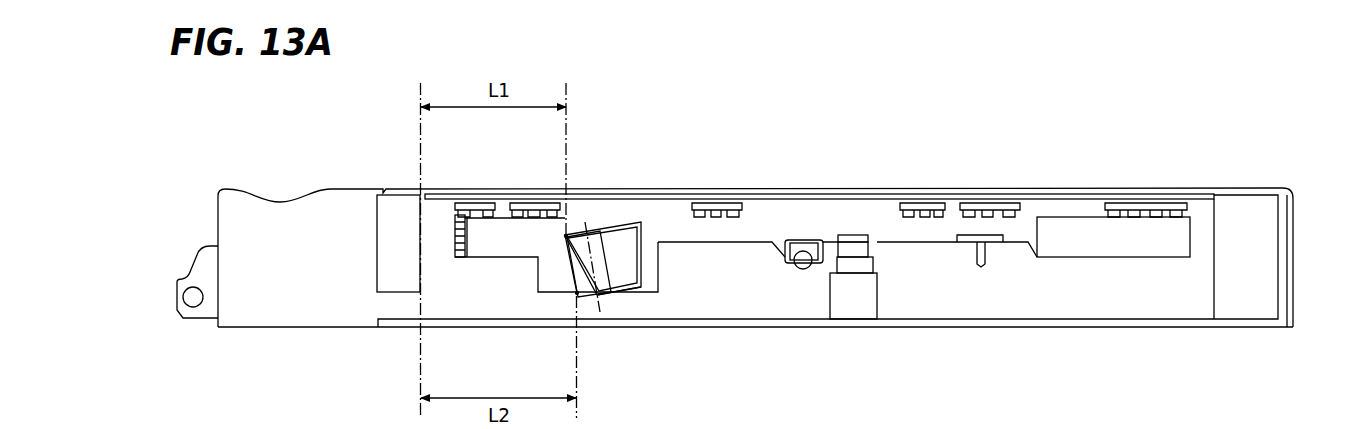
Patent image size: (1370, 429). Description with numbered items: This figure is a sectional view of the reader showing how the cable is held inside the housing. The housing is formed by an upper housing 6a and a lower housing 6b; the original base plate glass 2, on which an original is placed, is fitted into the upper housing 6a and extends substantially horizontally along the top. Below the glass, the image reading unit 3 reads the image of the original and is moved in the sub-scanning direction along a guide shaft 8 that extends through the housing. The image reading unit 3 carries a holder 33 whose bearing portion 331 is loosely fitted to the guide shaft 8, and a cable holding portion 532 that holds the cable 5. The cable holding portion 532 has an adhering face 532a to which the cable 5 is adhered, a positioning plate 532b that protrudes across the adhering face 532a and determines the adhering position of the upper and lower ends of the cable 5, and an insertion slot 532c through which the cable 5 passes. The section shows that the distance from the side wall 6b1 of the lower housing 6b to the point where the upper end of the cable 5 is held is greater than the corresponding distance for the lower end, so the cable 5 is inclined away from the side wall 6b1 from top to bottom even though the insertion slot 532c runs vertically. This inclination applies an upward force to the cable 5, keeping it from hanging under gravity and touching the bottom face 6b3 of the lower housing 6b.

The original base plate glass 2 is at (1208, 205).
The image reading unit 3 is at (1117, 263).
The cable 5 is at (613, 242).
The guide shaft 8 is at (811, 267).
The holder 33 is at (1153, 240).
The bearing portion 331 is at (793, 264).
The cable holding portion 532 is at (650, 265).
The adhering face 532a is at (545, 272).
The positioning plate 532b is at (633, 290).
The insertion slot 532c is at (633, 240).
The upper housing 6a is at (1262, 186).
The lower housing 6b is at (1258, 327).
The side wall 6b1 is at (420, 258).
The bottom face 6b3 is at (1057, 319).